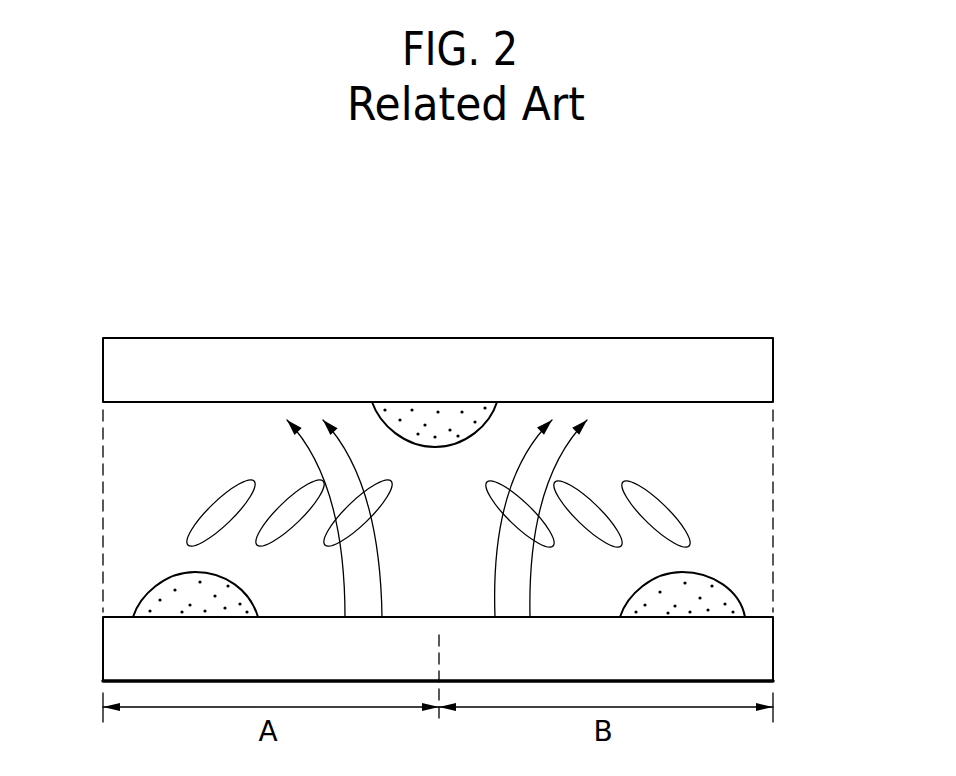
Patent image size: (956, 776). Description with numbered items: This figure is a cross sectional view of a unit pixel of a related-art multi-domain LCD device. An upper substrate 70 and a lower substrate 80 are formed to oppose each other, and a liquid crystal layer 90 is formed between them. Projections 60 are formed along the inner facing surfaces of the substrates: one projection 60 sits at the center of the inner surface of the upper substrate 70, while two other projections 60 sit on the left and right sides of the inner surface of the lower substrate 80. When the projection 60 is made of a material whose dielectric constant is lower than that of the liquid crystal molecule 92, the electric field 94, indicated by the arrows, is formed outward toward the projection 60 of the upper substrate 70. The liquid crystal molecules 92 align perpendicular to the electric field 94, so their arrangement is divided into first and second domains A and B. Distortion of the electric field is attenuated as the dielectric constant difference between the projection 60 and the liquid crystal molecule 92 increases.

The projection 60 is at (440, 413).
The upper substrate 70 is at (757, 376).
The lower substrate 80 is at (757, 654).
The liquid crystal layer 90 is at (782, 403).
The liquid crystal molecule 92 is at (660, 508).
The electric field 94 is at (385, 565).